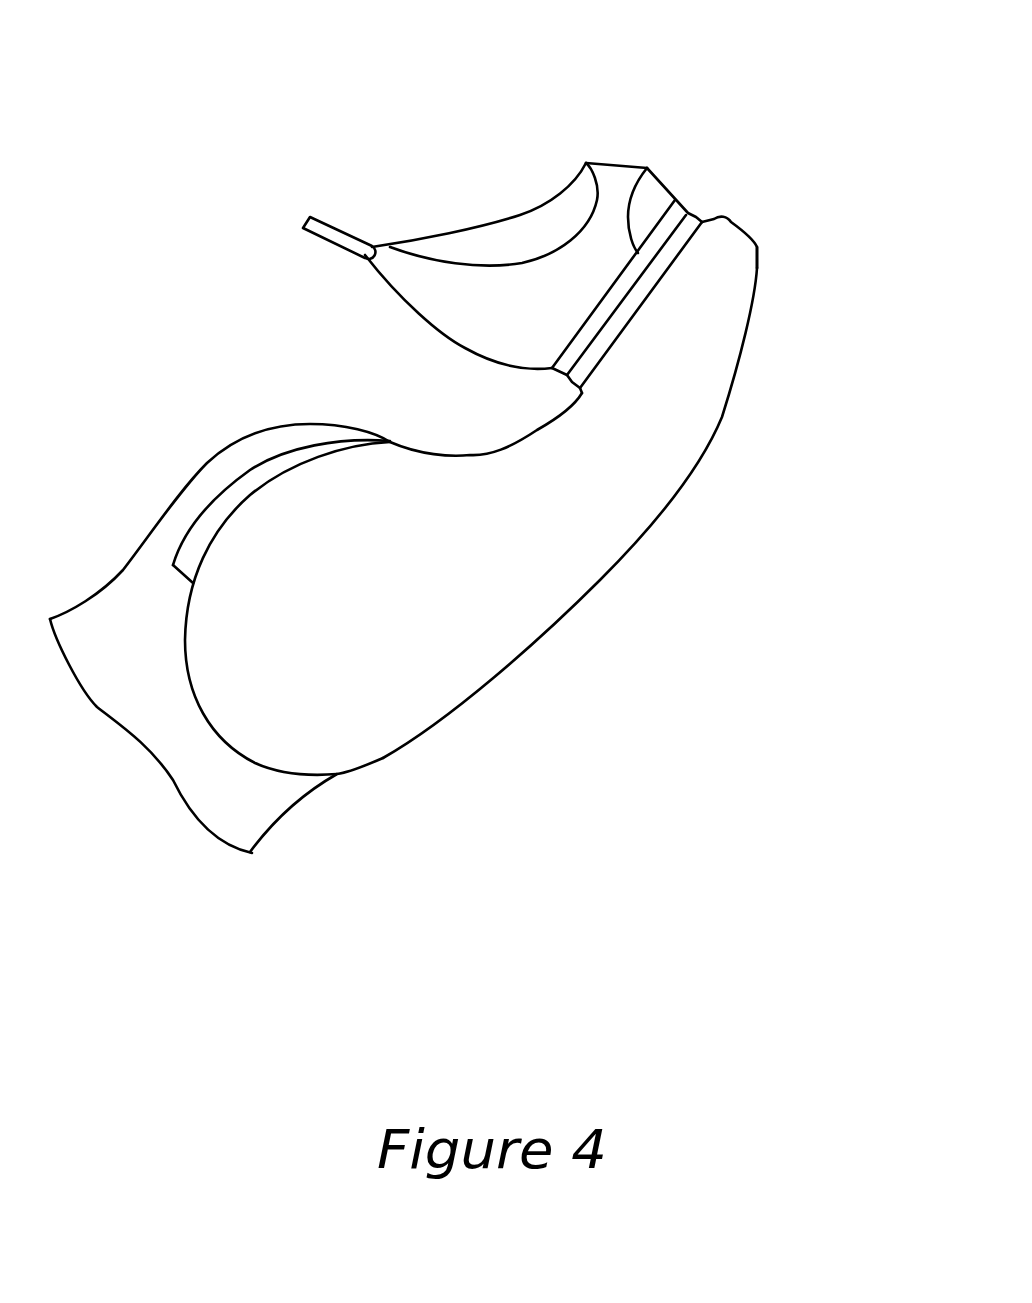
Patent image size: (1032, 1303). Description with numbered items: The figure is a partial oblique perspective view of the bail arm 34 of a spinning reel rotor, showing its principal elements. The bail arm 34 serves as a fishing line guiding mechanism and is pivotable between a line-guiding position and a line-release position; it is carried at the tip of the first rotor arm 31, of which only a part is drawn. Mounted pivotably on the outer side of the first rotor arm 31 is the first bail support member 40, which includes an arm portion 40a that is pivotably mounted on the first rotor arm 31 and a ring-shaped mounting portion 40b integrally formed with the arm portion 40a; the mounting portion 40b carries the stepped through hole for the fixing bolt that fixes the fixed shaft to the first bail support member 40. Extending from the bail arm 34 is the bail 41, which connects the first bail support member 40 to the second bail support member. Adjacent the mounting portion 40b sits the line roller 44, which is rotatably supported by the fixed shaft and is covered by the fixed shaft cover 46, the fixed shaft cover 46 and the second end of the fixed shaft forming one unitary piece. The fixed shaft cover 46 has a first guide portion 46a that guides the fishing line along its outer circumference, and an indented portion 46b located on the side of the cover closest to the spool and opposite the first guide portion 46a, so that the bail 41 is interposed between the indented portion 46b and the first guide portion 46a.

The first rotor arm 31 is at (265, 798).
The bail arm 34 is at (765, 272).
The first bail support member 40 is at (584, 619).
The arm portion 40a is at (638, 508).
The mounting portion 40b is at (728, 227).
The bail 41 is at (323, 233).
The line roller 44 is at (693, 212).
The fixed shaft cover 46 is at (583, 173).
The first guide portion 46a is at (465, 348).
The indented portion 46b is at (502, 223).